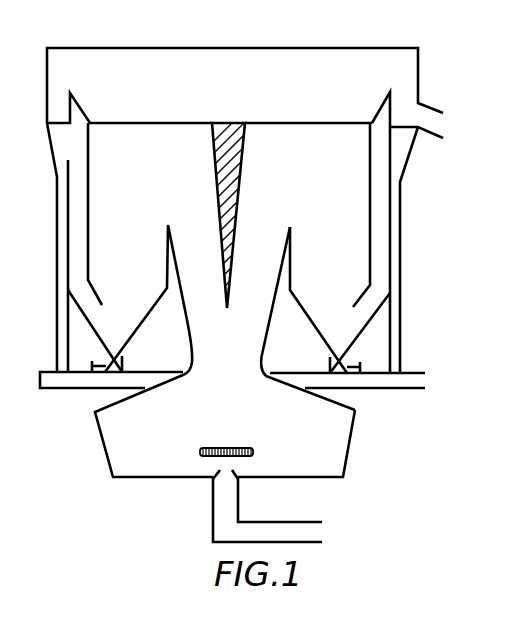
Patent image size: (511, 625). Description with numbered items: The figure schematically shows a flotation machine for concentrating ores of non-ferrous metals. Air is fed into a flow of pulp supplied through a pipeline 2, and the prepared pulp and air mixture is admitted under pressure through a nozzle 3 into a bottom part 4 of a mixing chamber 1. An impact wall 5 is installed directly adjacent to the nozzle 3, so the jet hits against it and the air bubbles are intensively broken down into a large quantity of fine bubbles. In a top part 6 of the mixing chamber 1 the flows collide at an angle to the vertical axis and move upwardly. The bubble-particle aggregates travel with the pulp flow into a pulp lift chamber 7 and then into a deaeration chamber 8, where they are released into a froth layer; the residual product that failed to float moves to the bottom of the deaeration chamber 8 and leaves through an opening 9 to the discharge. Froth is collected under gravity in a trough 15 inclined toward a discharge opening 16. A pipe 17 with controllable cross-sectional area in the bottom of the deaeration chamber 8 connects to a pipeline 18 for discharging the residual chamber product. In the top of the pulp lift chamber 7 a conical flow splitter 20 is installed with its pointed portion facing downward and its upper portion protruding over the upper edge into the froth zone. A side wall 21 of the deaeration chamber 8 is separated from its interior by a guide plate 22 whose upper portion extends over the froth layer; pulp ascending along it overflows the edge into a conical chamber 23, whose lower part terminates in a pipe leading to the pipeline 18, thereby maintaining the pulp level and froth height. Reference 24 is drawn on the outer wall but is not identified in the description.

The mixing chamber 1 is at (97, 448).
The pipeline 2 is at (315, 535).
The nozzle 3 is at (236, 471).
The bottom part 4 is at (351, 450).
The impact wall 5 is at (213, 458).
The top part 6 is at (356, 411).
The pulp lift chamber 7 is at (273, 325).
The deaeration chamber 8 is at (294, 257).
The opening 9 is at (118, 348).
The trough 15 is at (443, 112).
The discharge opening 16 is at (422, 118).
The pipe 17 is at (125, 365).
The pipeline 18 is at (415, 388).
The conical flow splitter 20 is at (232, 205).
The side wall 21 is at (390, 268).
The guide plate 22 is at (370, 237).
The chamber 23 is at (404, 166).
The outer wall 24 is at (395, 359).